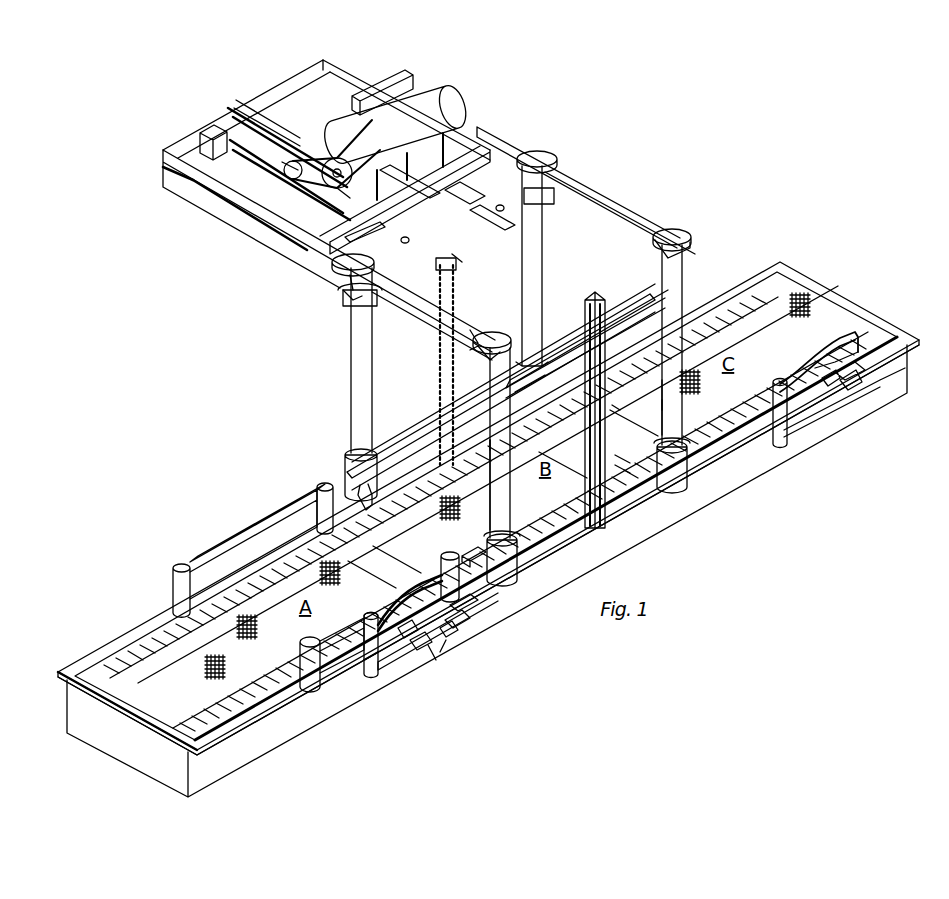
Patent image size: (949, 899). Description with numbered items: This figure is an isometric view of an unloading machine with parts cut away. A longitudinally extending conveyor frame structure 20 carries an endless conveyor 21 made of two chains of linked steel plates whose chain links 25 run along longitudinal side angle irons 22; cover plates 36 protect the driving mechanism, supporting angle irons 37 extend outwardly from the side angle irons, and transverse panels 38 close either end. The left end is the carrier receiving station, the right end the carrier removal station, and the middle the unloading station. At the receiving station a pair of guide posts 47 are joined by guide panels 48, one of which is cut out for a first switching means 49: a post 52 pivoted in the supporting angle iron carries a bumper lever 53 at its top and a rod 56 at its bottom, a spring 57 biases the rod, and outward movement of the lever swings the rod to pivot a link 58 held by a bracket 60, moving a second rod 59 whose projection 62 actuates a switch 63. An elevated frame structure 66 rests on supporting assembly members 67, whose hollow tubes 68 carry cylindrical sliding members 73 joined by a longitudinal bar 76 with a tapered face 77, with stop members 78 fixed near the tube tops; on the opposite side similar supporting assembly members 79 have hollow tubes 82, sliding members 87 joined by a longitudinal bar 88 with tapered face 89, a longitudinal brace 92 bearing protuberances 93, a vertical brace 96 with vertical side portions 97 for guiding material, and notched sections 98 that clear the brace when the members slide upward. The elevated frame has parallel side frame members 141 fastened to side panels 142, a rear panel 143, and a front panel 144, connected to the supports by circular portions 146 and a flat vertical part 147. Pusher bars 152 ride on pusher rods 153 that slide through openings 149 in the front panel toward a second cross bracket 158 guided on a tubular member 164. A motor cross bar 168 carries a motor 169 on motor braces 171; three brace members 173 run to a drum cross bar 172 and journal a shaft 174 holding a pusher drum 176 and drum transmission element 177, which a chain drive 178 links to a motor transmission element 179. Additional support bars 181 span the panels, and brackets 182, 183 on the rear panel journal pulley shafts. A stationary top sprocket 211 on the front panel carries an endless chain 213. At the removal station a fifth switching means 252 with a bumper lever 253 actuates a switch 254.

The conveyor frame structure 20 is at (145, 636).
The endless conveyor 21 is at (160, 645).
The side angle irons 22 is at (300, 730).
The chain links 25 is at (255, 590).
The cover plates 36 is at (135, 708).
The supporting angle irons 37 is at (238, 725).
The transverse panels 38 is at (175, 735).
The guide posts 47 is at (172, 585).
The guide panels 48 is at (242, 535).
The first switching means 49 is at (357, 672).
The post 52 is at (372, 615).
The bumper lever 53 is at (410, 585).
The rod 56 is at (385, 680).
The spring 57 is at (432, 660).
The link 58 is at (416, 652).
The second rod 59 is at (448, 638).
The bracket 60 is at (405, 640).
The projection 62 is at (462, 608).
The switch 63 is at (458, 624).
The elevated frame structure 66 is at (240, 225).
The supporting assembly members 67 is at (350, 378).
The hollow tubes 68 is at (372, 400).
The sliding members 73 is at (378, 470).
The longitudinal bar 76 is at (432, 442).
The tapered face 77 is at (378, 525).
The stop members 78 is at (344, 306).
The supporting assembly members 79 is at (510, 498).
The hollow tubes 82 is at (510, 453).
The sliding members 87 is at (518, 578).
The longitudinal bar 88 is at (624, 470).
The tapered face 89 is at (468, 550).
The longitudinal brace 92 is at (540, 350).
The protuberances 93 is at (560, 340).
The vertical brace 96 is at (607, 402).
The vertical side portions 97 is at (597, 293).
The notched sections 98 is at (487, 535).
The side frame members 141 is at (440, 335).
The side panels 142 is at (338, 258).
The rear panel 143 is at (218, 128).
The front panel 144 is at (372, 305).
The circular portions 146 is at (345, 275).
The flat vertical part 147 is at (490, 362).
The openings 149 is at (462, 219).
The pusher bars 152 is at (447, 247).
The pusher rods 153 is at (400, 218).
The second cross bracket 158 is at (283, 102).
The tubular member 164 is at (410, 186).
The motor cross bar 168 is at (480, 136).
The motor 169 is at (460, 100).
The motor braces 171 is at (410, 166).
The drum cross bar 172 is at (212, 205).
The brace members 173 is at (330, 156).
The shaft 174 is at (262, 230).
The pusher drum 176 is at (382, 92).
The drum transmission element 177 is at (293, 180).
The chain drive 178 is at (352, 165).
The motor transmission element 179 is at (345, 205).
The additional support bars 181 is at (252, 115).
The bracket 182 is at (200, 140).
The bracket 183 is at (306, 85).
The stationary top sprocket 211 is at (440, 272).
The endless chain 213 is at (455, 300).
The fifth switching means 252 is at (862, 380).
The bumper lever 253 is at (812, 360).
The switch 254 is at (855, 400).